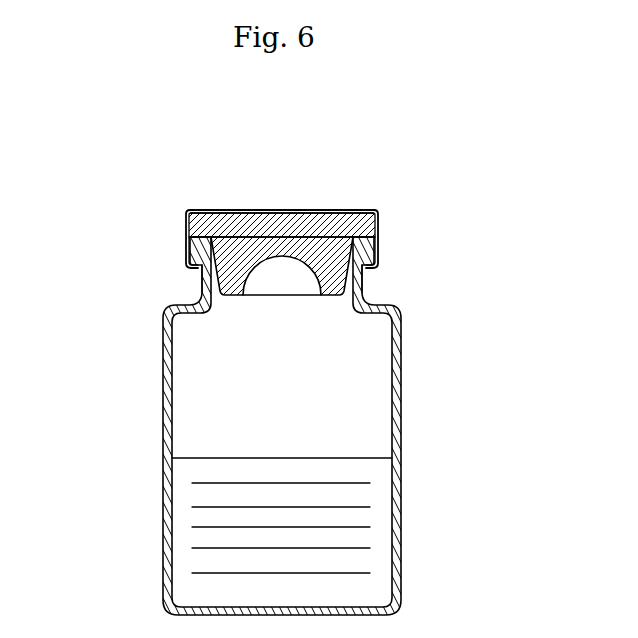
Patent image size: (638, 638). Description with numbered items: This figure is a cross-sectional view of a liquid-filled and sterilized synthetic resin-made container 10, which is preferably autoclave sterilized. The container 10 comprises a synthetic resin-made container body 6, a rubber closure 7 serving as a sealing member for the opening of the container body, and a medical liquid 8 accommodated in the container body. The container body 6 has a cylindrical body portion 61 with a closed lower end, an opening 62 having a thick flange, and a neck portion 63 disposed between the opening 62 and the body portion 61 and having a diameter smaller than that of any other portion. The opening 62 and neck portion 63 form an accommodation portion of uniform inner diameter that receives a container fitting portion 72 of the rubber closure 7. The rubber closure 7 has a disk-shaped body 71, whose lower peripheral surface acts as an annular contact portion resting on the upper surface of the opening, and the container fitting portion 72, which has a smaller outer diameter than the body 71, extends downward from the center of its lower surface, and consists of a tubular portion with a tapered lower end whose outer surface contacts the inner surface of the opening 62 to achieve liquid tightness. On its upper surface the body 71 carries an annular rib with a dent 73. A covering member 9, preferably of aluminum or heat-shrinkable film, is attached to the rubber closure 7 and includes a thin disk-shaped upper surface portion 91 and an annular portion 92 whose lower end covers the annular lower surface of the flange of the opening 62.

The liquid-filled and sterilized synthetic resin-made container 10 is at (486, 392).
The container body 6 is at (154, 422).
The body portion 61 is at (400, 475).
The opening 62 is at (188, 253).
The neck portion 63 is at (201, 293).
The rubber closure 7 is at (377, 233).
The body 71 is at (325, 212).
The container fitting portion 72 is at (362, 270).
The dent 73 is at (285, 212).
The medical liquid 8 is at (212, 557).
The covering member 9 is at (243, 199).
The upper surface portion 91 is at (363, 212).
The annular portion 92 is at (187, 223).